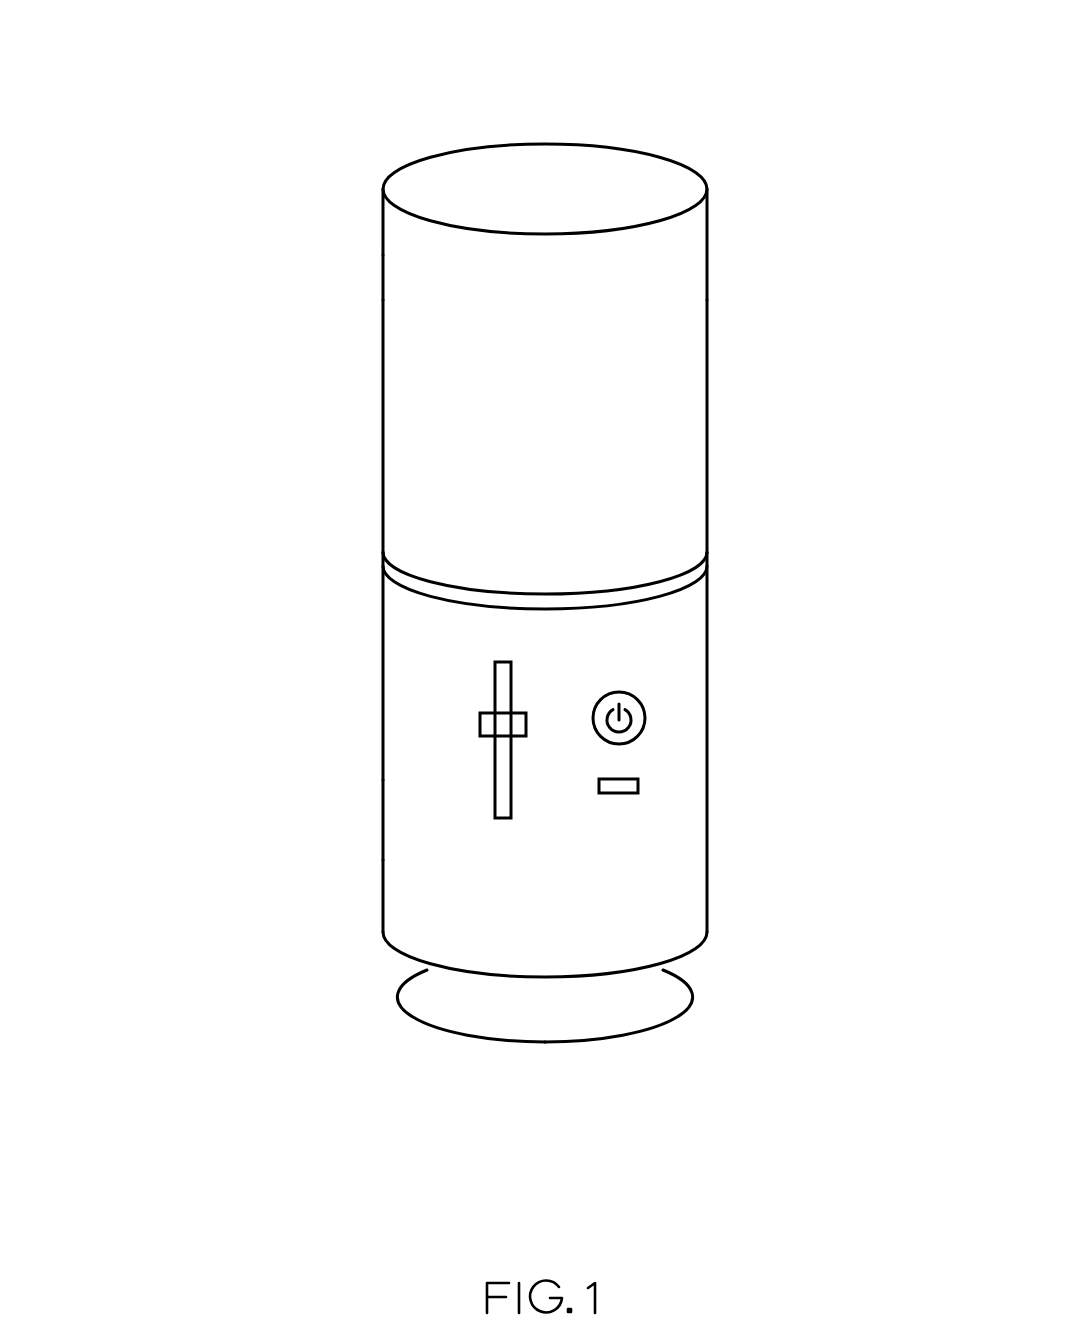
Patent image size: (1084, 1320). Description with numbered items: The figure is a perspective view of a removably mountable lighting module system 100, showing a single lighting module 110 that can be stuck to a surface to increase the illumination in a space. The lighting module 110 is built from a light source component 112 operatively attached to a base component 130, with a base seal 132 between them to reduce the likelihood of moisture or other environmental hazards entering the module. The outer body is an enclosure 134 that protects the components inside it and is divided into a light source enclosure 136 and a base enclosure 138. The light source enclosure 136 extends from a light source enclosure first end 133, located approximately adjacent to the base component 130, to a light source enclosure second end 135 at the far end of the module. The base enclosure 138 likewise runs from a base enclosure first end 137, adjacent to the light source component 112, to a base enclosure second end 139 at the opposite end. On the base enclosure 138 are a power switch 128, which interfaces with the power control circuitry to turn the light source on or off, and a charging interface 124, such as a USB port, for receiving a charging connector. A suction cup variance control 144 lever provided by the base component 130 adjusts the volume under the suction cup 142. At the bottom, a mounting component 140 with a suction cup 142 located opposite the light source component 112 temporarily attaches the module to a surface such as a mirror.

The removably mountable lighting module system 100 is at (344, 66).
The lighting module 110 is at (463, 165).
The light source component 112 is at (410, 410).
The charging interface 124 is at (638, 779).
The power switch 128 is at (647, 718).
The base component 130 is at (410, 755).
The base seal 132 is at (403, 577).
The light source enclosure first end 133 is at (667, 538).
The enclosure 134 is at (410, 275).
The light source enclosure second end 135 is at (667, 247).
The light source enclosure 136 is at (410, 238).
The base enclosure first end 137 is at (403, 652).
The base enclosure 138 is at (418, 830).
The base enclosure second end 139 is at (682, 922).
The mounting component 140 is at (433, 995).
The suction cup 142 is at (658, 1005).
The suction cup variance control 144 is at (507, 725).